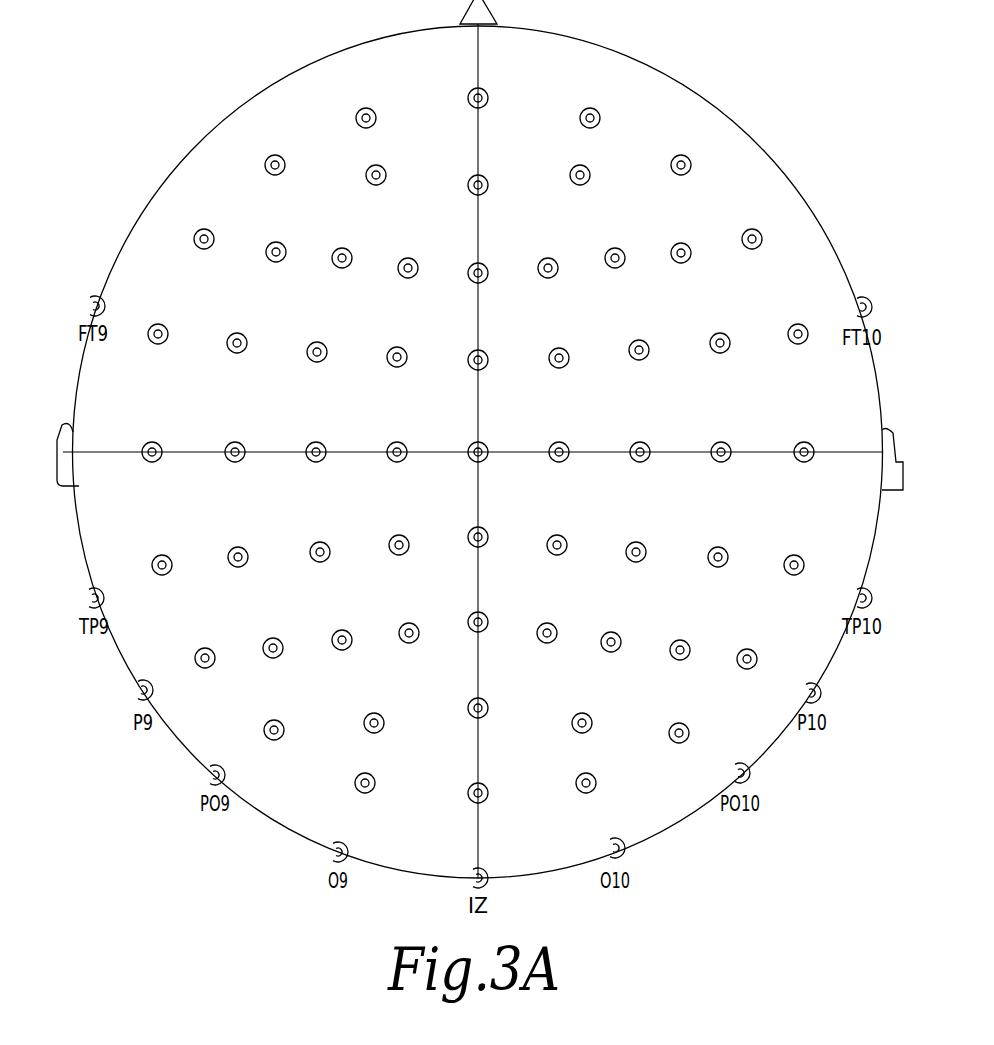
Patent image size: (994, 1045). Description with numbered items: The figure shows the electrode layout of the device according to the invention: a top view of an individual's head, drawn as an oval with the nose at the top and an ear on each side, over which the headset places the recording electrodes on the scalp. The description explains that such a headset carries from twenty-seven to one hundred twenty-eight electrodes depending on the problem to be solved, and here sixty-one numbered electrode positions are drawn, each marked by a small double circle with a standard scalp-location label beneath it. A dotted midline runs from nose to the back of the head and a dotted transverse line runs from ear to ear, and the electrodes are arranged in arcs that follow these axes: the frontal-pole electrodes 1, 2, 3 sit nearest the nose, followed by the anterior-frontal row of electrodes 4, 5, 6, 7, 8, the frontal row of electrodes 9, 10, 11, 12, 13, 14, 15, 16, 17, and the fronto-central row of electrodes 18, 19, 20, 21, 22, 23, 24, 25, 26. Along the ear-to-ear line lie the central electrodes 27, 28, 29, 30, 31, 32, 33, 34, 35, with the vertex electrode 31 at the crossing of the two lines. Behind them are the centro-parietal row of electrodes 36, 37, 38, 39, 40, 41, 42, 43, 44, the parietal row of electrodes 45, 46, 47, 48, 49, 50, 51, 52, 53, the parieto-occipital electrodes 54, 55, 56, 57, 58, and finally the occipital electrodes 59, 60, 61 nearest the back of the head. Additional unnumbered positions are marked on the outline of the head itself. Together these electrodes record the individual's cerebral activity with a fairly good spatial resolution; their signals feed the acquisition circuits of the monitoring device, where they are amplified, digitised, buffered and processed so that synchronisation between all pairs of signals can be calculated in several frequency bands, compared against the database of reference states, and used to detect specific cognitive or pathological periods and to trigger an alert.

The FP1 electrode 1 is at (363, 124).
The FPZ electrode 2 is at (475, 104).
The FP2 electrode 3 is at (587, 124).
The AF7 electrode 4 is at (272, 171).
The AF3 electrode 5 is at (373, 181).
The AFZ electrode 6 is at (475, 191).
The AF4 electrode 7 is at (577, 181).
The AF8 electrode 8 is at (678, 171).
The F7 electrode 9 is at (198, 245).
The electrophysiological signals acquisition and digitisation step 10 is at (265, 258).
The synchronisation calculation step 11 is at (331, 264).
The database building step 12 is at (397, 274).
The statistical validation step 13 is at (467, 279).
The detection step 14 is at (537, 274).
The alert signal sending step 15 is at (604, 264).
The F6 electrode 16 is at (670, 259).
The F8 electrode 17 is at (741, 245).
The FT7 electrode 18 is at (149, 340).
The FC5 electrode 19 is at (228, 349).
The amplifier 20 is at (308, 358).
The analogue-digital converter 21 is at (388, 363).
The buffer 22 is at (469, 366).
The processor 23 is at (550, 364).
The alert circuit 24 is at (630, 356).
The FC6 electrode 25 is at (711, 349).
The FC8 electrode 26 is at (789, 340).
The T7 electrode 27 is at (141, 458).
The C5 electrode 28 is at (224, 458).
The C3 electrode 29 is at (305, 458).
The C1 electrode 30 is at (386, 458).
The CZ electrode 31 is at (467, 458).
The C2 electrode 32 is at (548, 458).
The C4 electrode 33 is at (629, 458).
The C6 electrode 34 is at (710, 458).
The T8 electrode 35 is at (793, 458).
The TP7 electrode 36 is at (153, 571).
The CP5 electrode 37 is at (229, 563).
The CP3 electrode 38 is at (311, 558).
The CP1 electrode 39 is at (390, 551).
The CPZ electrode 40 is at (469, 543).
The CP2 electrode 41 is at (548, 551).
The CP4 electrode 42 is at (627, 558).
The CP6 electrode 43 is at (709, 563).
The TP8 electrode 44 is at (785, 571).
The P7 electrode 45 is at (194, 664).
The P5 electrode 46 is at (262, 654).
The P3 electrode 47 is at (331, 646).
The P1 electrode 48 is at (398, 639).
The PZ electrode 49 is at (467, 628).
The P2 electrode 50 is at (536, 639).
The P4 electrode 51 is at (600, 648).
The P6 electrode 52 is at (669, 656).
The P8 electrode 53 is at (736, 665).
The PO7 electrode 54 is at (265, 736).
The PO1 electrode 55 is at (365, 729).
The POZ electrode 56 is at (469, 714).
The PO2 electrode 57 is at (573, 729).
The PO8 electrode 58 is at (670, 739).
The O1 electrode 59 is at (354, 789).
The OZ electrode 60 is at (467, 799).
The O2 electrode 61 is at (575, 789).